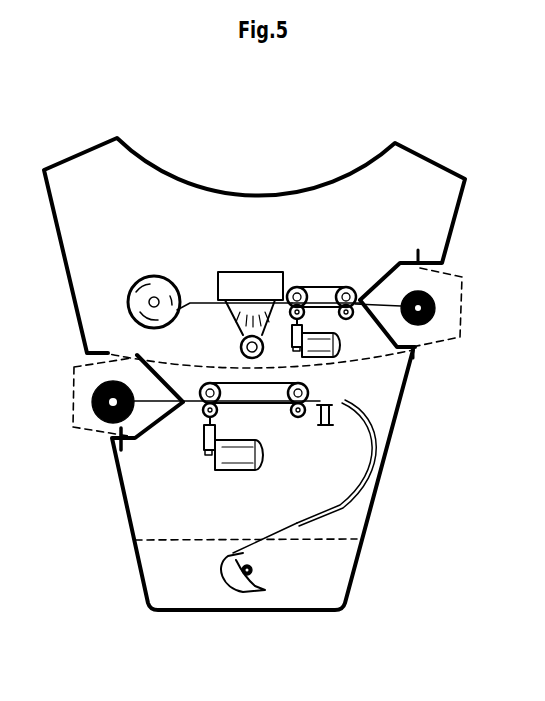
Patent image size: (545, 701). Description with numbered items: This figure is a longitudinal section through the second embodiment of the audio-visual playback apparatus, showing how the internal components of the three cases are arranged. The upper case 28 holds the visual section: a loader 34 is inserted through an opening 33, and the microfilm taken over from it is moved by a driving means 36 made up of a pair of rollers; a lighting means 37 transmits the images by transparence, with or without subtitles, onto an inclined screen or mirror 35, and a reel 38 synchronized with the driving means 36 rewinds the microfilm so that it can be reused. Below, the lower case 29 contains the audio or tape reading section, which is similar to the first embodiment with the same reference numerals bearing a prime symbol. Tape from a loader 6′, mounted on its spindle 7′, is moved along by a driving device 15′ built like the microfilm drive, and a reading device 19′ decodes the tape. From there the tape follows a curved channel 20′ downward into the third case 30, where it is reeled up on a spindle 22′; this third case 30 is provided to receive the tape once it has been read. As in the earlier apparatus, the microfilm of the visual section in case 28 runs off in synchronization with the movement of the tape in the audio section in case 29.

The upper case 28 is at (460, 222).
The lower case 29 is at (385, 497).
The third case 30 is at (357, 582).
The opening 33 is at (423, 278).
The loader 34 is at (463, 315).
The inclined screen or mirror 35 is at (260, 283).
The microfilm driving means 36 is at (328, 288).
The lighting means 37 is at (238, 342).
The reel 38 is at (160, 277).
The driving device 15′ is at (305, 395).
The reading device 19′ is at (333, 414).
The channel 20′ is at (365, 470).
The spindle 22′ is at (225, 585).
The loader 6′ is at (73, 388).
The reel spindle 7′ is at (116, 433).